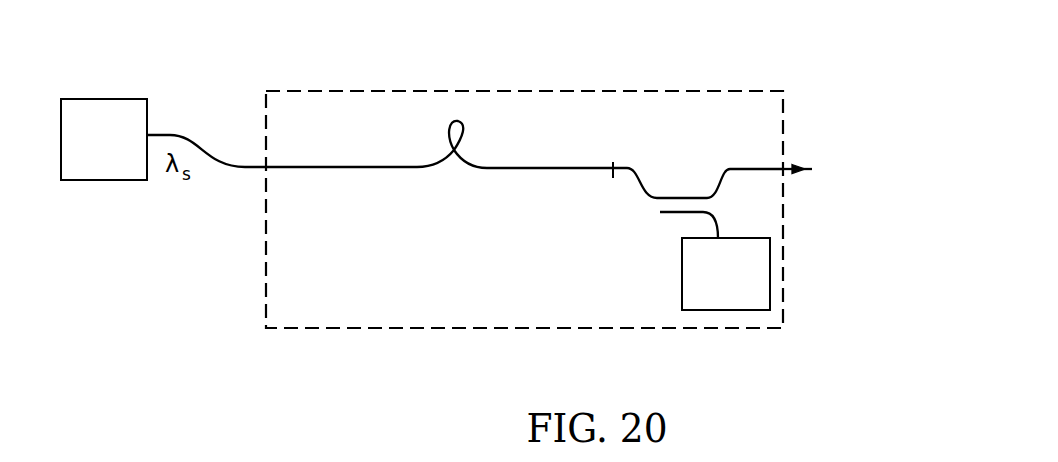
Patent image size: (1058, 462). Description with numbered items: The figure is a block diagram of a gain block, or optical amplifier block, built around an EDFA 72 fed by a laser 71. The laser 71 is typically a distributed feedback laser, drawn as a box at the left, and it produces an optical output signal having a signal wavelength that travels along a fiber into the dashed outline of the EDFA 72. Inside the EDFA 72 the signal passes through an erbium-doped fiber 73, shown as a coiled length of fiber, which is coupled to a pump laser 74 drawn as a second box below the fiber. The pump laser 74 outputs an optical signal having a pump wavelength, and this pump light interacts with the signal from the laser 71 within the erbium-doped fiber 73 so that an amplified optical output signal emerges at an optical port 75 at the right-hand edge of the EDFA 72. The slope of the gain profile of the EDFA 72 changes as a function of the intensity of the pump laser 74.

The laser 71 is at (111, 97).
The EDFA 72 is at (505, 91).
The erbium-doped fiber 73 is at (492, 170).
The pump laser 74 is at (680, 270).
The optical port 75 is at (783, 160).